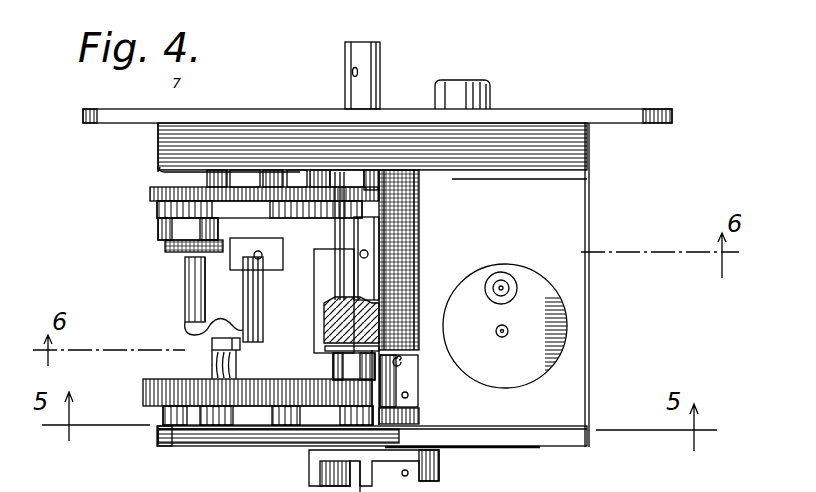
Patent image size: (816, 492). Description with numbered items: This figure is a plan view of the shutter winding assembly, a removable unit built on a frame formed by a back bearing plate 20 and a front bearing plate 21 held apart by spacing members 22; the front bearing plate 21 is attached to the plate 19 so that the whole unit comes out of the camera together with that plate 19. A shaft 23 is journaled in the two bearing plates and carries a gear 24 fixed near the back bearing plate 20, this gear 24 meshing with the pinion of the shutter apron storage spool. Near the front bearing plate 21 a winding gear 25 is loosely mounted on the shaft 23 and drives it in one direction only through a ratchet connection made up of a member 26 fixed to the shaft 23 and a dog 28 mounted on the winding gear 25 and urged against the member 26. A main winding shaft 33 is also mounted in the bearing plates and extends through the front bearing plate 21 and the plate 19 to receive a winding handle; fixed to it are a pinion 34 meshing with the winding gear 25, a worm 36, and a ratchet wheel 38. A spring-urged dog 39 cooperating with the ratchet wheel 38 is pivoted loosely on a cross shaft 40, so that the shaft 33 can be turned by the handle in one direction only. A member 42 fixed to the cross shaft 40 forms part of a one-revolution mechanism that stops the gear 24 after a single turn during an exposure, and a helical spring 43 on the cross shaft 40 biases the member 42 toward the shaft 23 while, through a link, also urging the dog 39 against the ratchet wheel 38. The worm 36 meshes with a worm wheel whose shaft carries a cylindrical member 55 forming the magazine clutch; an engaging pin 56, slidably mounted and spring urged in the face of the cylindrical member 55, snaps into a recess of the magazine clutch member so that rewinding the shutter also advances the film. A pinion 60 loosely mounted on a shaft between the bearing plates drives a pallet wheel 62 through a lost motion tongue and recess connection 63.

The plate 19 is at (540, 109).
The back bearing plate 20 is at (514, 438).
The front bearing plate 21 is at (570, 150).
The spacing members 22 is at (548, 223).
The shaft 23 is at (257, 291).
The gear 24 is at (145, 390).
The winding gear 25 is at (150, 196).
The member 26 is at (314, 292).
The dog 28 is at (160, 232).
The main winding shaft 33 is at (372, 63).
The pinion 34 is at (384, 163).
The worm 36 is at (325, 321).
The ratchet wheel 38 is at (307, 163).
The dog 39 is at (345, 163).
The cross shaft 40 is at (405, 371).
The member 42 is at (310, 415).
The spring 43 is at (407, 242).
The cylindrical member 55 is at (540, 331).
The engaging pin 56 is at (517, 288).
The pinion 60 is at (205, 368).
The pallet wheel 62 is at (200, 302).
The lost motion tongue and recess connection 63 is at (213, 344).